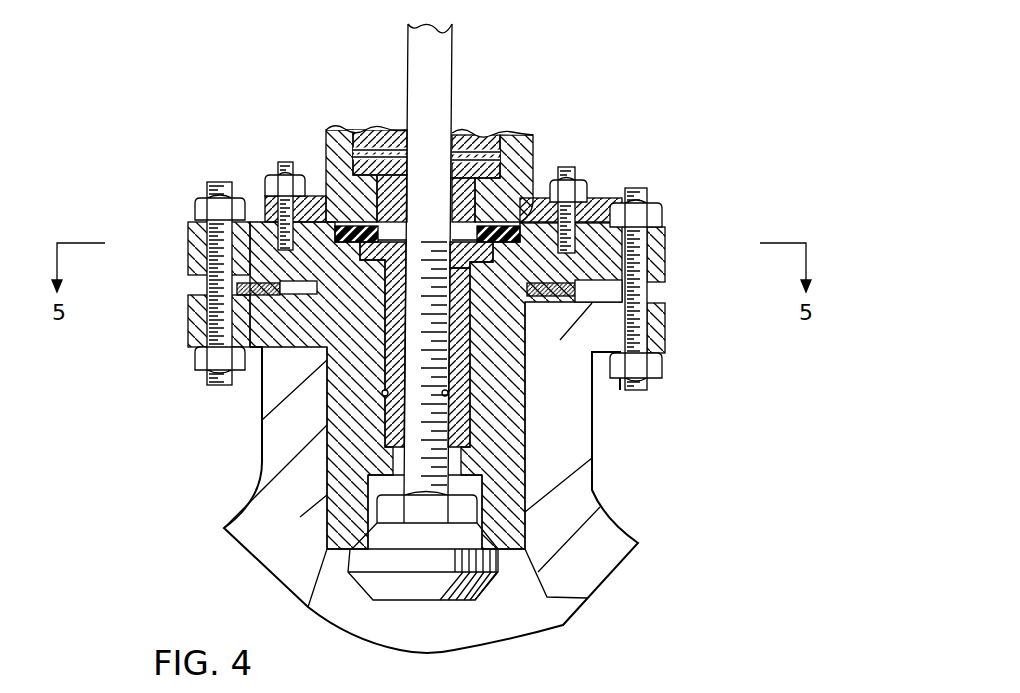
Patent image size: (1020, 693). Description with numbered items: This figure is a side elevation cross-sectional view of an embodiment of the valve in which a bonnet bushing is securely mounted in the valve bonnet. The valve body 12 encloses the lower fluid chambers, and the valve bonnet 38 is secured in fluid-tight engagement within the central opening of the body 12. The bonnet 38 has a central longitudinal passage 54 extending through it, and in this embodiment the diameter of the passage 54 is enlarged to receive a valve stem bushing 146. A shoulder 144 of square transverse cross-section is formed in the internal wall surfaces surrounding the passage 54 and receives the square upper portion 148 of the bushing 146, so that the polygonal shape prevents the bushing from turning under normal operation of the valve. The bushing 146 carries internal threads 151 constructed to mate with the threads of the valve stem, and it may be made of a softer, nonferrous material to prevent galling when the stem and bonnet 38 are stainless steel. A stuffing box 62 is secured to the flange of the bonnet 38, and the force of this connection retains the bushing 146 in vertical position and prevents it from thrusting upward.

The valve body 12 is at (606, 505).
The valve bonnet 38 is at (523, 475).
The central longitudinal threaded bore 54 is at (383, 392).
The stuffing box 62 is at (533, 150).
The shoulder 144 is at (492, 250).
The valve stem bushing 146 is at (474, 418).
The square upper portion 148 is at (508, 226).
The internal threads 151 is at (448, 393).